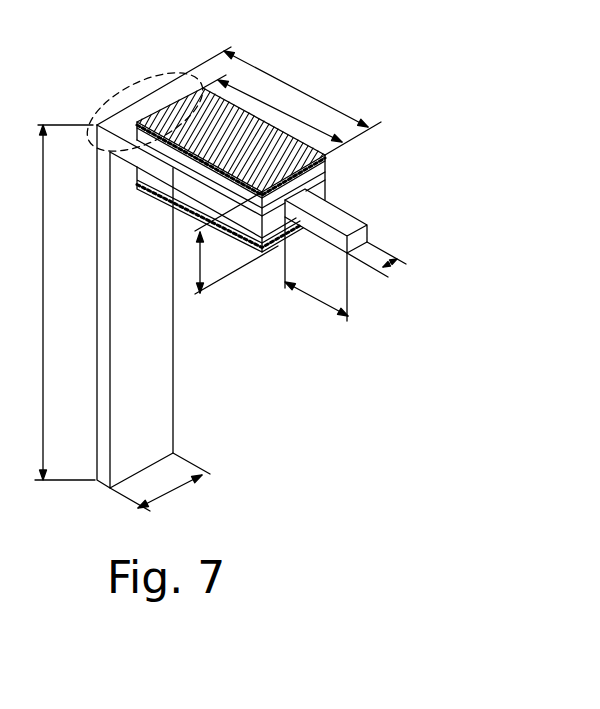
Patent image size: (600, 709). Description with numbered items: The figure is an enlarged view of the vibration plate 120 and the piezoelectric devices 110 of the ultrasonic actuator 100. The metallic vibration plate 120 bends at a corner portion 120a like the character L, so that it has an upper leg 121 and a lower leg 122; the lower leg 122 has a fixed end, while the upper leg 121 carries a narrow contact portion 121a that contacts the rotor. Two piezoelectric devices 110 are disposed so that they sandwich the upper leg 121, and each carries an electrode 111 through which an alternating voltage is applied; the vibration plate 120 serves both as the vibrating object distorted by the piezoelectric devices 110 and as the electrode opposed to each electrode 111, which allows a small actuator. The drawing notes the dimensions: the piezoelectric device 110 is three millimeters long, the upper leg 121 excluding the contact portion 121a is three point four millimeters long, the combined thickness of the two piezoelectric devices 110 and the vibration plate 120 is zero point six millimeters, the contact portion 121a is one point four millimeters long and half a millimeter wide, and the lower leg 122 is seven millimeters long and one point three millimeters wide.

The ultrasonic actuator 100 is at (390, 80).
The piezoelectric device 110 is at (182, 160).
The electrode 111 is at (172, 155).
The vibration plate 120 is at (285, 340).
The corner portion 120a is at (133, 75).
The upper leg 121 is at (273, 232).
The contact portion 121a is at (341, 216).
The lower leg 122 is at (150, 372).